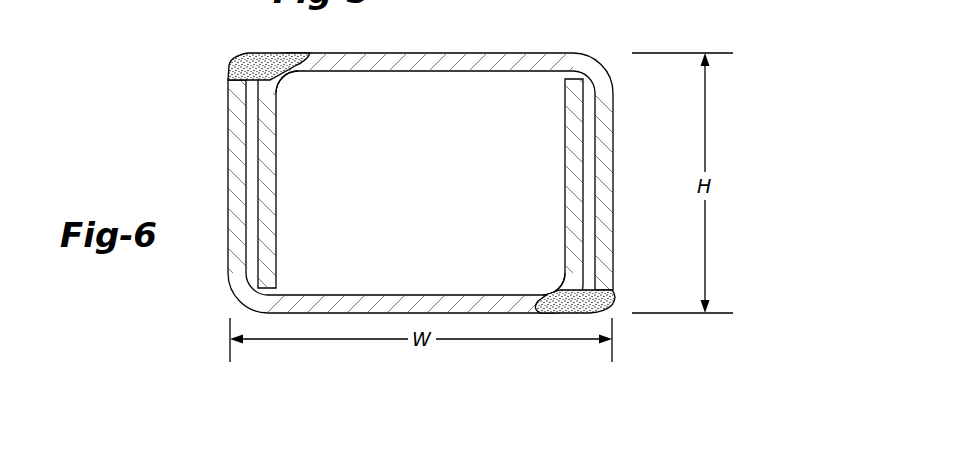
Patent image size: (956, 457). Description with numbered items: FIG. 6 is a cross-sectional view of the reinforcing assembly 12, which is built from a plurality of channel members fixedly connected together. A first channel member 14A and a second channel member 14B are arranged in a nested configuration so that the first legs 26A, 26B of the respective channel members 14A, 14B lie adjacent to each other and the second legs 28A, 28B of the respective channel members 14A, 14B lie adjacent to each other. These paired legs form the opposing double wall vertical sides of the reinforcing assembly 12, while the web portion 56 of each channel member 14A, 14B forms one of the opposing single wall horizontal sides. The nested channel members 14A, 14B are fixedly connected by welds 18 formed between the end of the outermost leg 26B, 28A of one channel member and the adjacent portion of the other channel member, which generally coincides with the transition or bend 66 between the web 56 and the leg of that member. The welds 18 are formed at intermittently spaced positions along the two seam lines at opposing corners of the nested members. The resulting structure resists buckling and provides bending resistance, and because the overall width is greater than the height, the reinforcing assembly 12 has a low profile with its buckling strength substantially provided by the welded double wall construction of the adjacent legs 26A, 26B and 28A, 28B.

The reinforcing assembly 12 is at (160, 110).
The first channel member 14A is at (212, 285).
The second channel member 14B is at (609, 31).
The weld 18 is at (236, 62).
The first leg of first channel member 26A is at (565, 171).
The first leg of second channel member 26B is at (613, 171).
The second leg of first channel member 28A is at (228, 171).
The second leg of second channel member 28B is at (277, 171).
The web portion 56 is at (437, 53).
The bend 66 is at (284, 77).